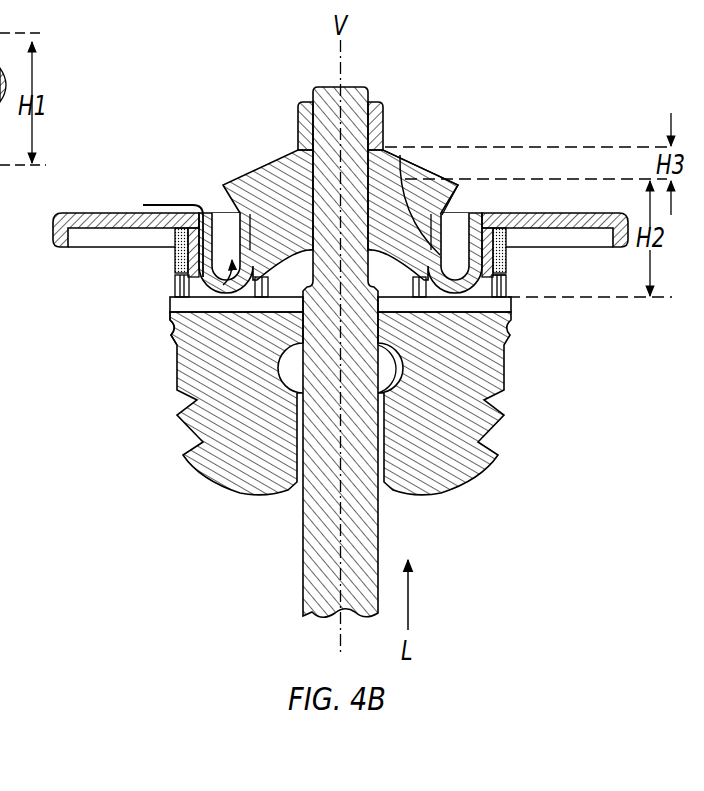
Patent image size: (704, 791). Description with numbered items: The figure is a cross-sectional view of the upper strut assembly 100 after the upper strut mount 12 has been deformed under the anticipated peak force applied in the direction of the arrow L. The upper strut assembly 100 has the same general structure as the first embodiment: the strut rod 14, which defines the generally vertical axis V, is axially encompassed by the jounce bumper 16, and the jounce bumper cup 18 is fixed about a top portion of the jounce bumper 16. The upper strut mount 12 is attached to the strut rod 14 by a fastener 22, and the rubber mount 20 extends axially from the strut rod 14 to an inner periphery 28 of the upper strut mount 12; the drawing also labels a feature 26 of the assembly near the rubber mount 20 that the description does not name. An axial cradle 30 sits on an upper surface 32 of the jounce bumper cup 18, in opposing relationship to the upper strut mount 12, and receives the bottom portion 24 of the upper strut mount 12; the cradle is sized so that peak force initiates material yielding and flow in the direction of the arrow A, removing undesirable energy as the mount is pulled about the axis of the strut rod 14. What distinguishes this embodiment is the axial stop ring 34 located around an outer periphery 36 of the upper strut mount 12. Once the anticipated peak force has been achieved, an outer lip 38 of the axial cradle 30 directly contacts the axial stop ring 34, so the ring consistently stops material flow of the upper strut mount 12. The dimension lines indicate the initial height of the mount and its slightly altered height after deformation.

The upper strut assembly 100 is at (272, 68).
The upper strut mount 12 is at (62, 217).
The strut rod 14 is at (307, 543).
The jounce bumper 16 is at (213, 386).
The jounce bumper cup 18 is at (173, 313).
The rubber mount 20 is at (263, 185).
The fastener 22 is at (378, 102).
The bottom portion 24 is at (457, 300).
The isolator shoulder 26 is at (455, 183).
The inner periphery 28 is at (407, 207).
The axial cradle 30 is at (177, 288).
The upper surface 32 is at (170, 297).
The axial stop ring 34 is at (507, 277).
The outer periphery 36 is at (492, 228).
The outer lip 38 is at (176, 277).